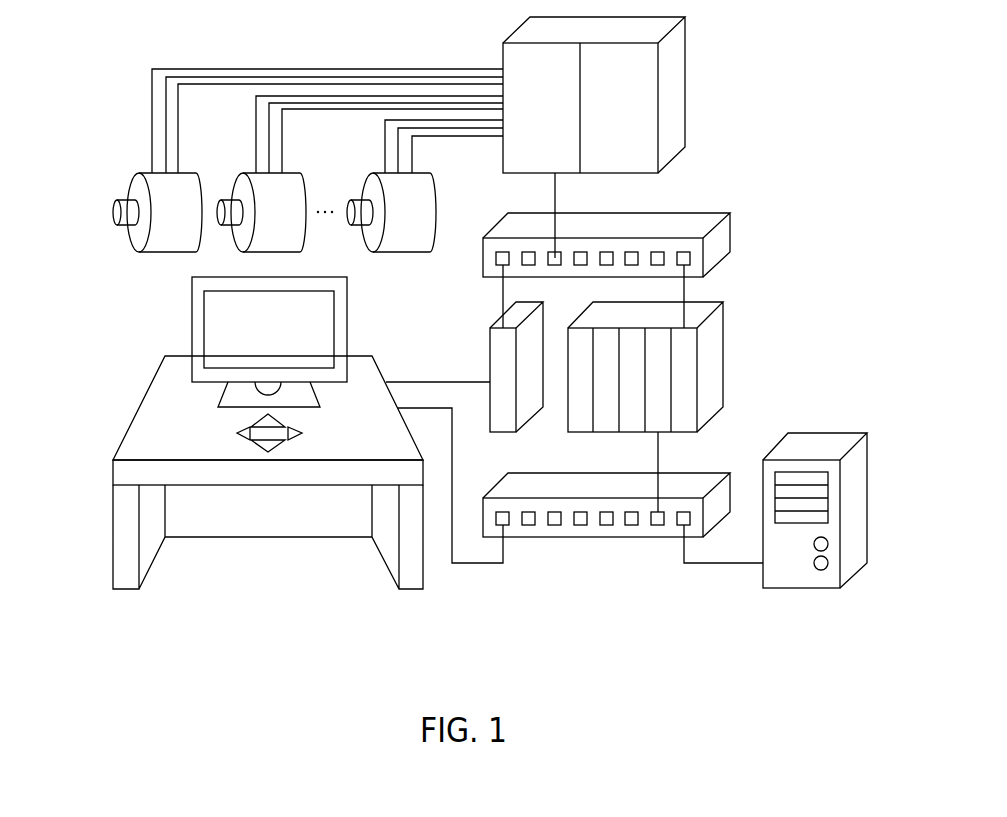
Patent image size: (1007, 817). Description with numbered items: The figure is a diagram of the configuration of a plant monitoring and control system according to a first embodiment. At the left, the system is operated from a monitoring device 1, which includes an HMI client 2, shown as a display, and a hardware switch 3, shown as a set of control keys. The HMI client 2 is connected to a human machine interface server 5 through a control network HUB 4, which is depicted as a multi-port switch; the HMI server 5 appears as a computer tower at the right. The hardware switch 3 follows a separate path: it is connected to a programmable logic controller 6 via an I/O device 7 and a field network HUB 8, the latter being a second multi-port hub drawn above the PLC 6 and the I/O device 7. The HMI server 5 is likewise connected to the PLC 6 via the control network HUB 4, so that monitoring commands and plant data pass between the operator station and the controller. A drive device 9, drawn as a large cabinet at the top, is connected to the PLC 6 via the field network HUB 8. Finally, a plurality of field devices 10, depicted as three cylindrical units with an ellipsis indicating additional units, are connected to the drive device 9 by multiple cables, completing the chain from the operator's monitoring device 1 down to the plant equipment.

The monitoring device 1 is at (150, 384).
The HMI client 2 is at (192, 305).
The hardware switch 3 is at (218, 432).
The control network HUB 4 is at (554, 537).
The human machine interface (HMI) server 5 is at (867, 507).
The programmable logic controller (PLC) 6 is at (723, 352).
The I/O device 7 is at (490, 362).
The field network HUB 8 is at (730, 232).
The drive device 9 is at (685, 92).
The field devices 10 is at (113, 215).